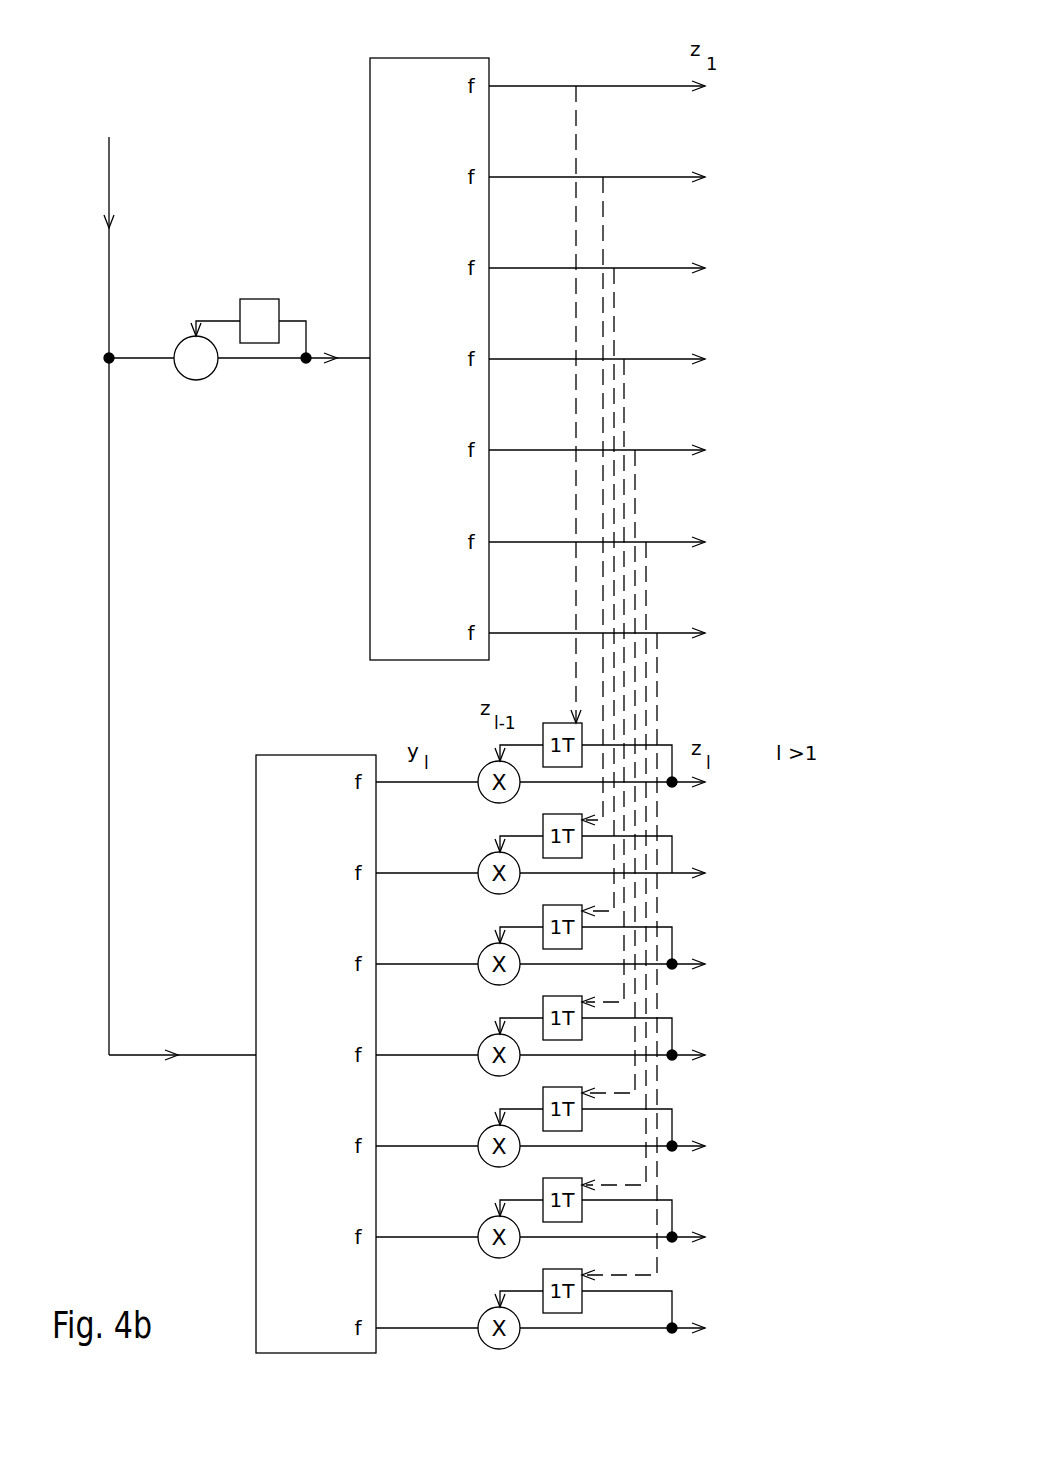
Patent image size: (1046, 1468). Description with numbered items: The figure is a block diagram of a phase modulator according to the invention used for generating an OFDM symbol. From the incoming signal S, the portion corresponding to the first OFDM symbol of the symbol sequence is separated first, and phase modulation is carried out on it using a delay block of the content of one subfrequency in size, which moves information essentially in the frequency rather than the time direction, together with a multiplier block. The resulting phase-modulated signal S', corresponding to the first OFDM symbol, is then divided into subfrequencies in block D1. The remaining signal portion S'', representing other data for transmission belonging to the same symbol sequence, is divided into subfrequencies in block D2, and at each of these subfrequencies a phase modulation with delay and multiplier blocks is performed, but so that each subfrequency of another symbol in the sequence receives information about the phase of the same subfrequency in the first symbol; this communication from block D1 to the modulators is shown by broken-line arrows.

The block D1 is at (445, 58).
The block D2 is at (332, 755).
The signal S is at (125, 596).
The phase-modulated signal S' is at (239, 339).
The signal portion S'' is at (182, 1034).